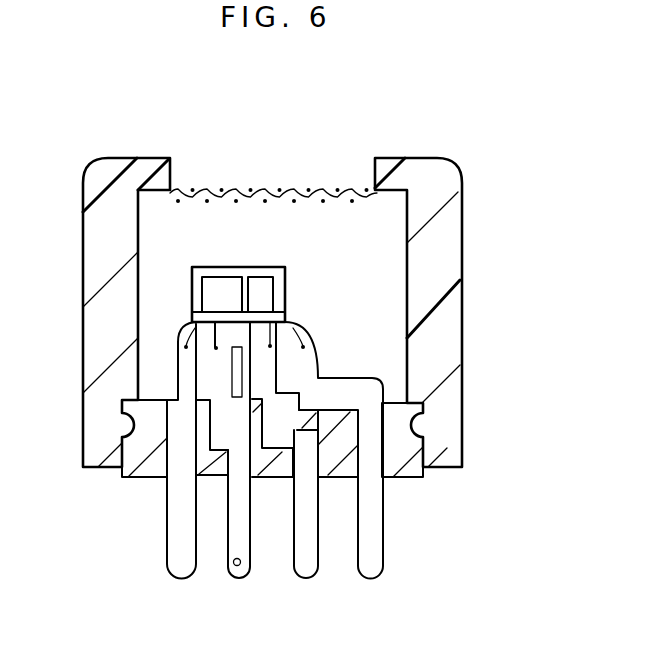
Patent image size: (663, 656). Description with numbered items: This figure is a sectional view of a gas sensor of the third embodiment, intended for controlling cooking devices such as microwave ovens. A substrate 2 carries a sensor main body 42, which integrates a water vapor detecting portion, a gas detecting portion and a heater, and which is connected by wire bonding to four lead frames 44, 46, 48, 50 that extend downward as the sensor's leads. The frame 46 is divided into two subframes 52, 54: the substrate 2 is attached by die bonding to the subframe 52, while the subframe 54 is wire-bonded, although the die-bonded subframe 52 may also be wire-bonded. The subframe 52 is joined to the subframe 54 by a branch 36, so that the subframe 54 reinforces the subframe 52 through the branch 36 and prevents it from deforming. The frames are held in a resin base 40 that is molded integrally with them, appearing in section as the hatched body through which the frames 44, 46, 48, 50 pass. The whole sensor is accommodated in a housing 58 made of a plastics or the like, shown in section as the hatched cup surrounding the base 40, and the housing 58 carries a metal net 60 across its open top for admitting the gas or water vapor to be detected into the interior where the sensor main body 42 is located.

The substrate 2 is at (260, 266).
The branch 36 is at (255, 316).
The resin base 40 is at (402, 453).
The sensor main body 42 is at (232, 290).
The frame 44 is at (180, 527).
The frame 46 is at (232, 543).
The frame 48 is at (305, 563).
The frame 50 is at (372, 568).
The subframe 52 is at (250, 370).
The subframe 54 is at (220, 370).
The housing 58 is at (444, 256).
The metal net 60 is at (300, 186).